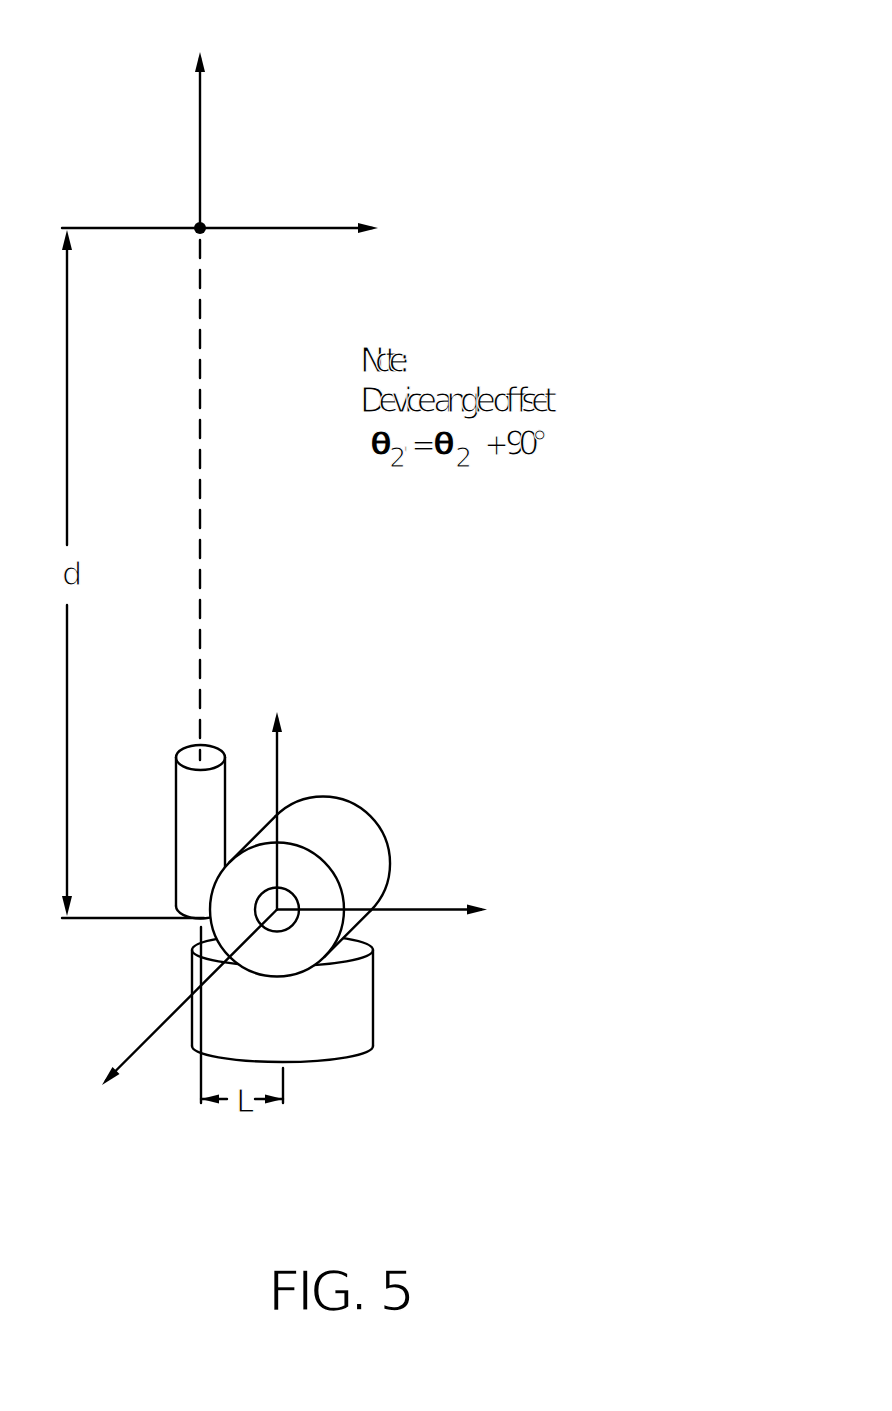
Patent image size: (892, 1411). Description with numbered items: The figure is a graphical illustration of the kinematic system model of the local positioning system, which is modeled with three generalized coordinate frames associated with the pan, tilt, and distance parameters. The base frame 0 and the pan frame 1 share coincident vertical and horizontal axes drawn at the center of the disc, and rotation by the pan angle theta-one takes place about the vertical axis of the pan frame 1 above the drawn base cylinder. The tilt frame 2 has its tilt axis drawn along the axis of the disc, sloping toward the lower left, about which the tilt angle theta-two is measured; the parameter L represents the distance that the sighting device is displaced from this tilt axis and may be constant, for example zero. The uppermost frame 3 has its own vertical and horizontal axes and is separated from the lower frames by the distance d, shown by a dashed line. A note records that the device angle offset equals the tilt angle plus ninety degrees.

The base coordinate frame (X0, Z0 axes) 0 is at (440, 798).
The base cylinder rotating by angle theta1 about Z1 1 is at (282, 891).
The disc rotating by angle theta2 about Z2 axis 2 is at (232, 957).
The sensor coordinate frame (X3, Z3 axes) 3 is at (308, 383).